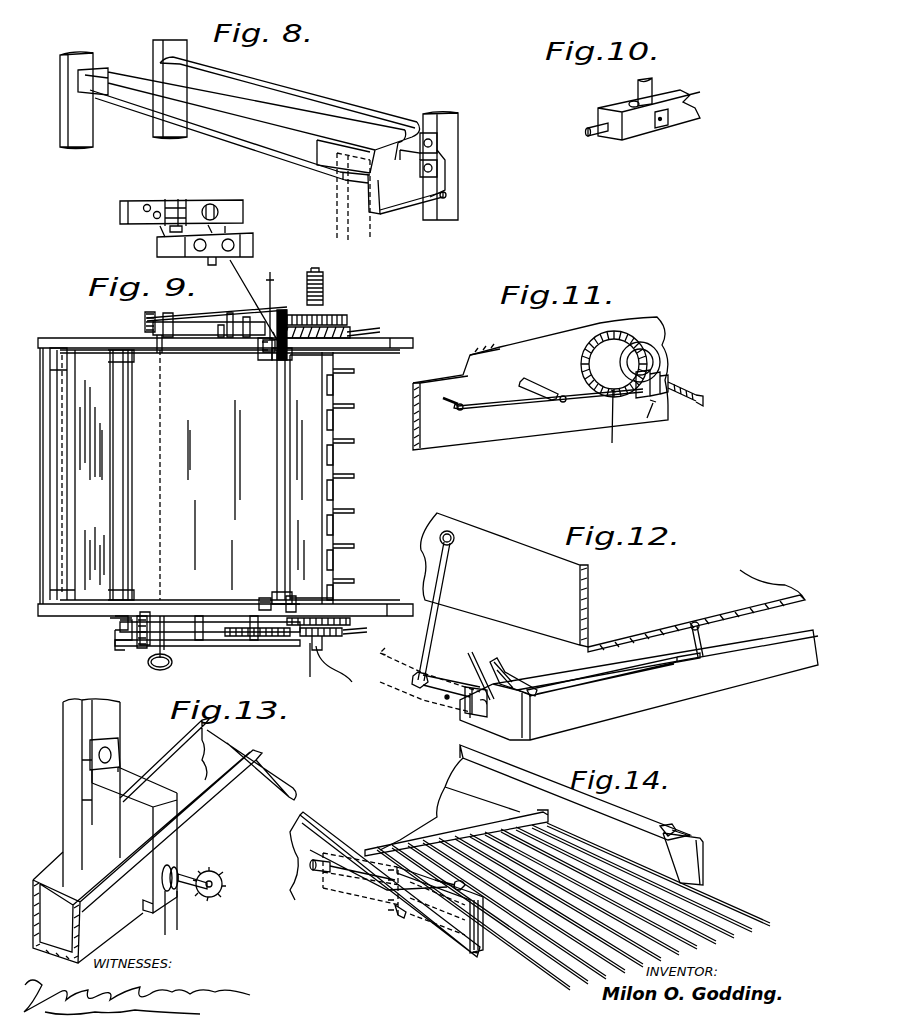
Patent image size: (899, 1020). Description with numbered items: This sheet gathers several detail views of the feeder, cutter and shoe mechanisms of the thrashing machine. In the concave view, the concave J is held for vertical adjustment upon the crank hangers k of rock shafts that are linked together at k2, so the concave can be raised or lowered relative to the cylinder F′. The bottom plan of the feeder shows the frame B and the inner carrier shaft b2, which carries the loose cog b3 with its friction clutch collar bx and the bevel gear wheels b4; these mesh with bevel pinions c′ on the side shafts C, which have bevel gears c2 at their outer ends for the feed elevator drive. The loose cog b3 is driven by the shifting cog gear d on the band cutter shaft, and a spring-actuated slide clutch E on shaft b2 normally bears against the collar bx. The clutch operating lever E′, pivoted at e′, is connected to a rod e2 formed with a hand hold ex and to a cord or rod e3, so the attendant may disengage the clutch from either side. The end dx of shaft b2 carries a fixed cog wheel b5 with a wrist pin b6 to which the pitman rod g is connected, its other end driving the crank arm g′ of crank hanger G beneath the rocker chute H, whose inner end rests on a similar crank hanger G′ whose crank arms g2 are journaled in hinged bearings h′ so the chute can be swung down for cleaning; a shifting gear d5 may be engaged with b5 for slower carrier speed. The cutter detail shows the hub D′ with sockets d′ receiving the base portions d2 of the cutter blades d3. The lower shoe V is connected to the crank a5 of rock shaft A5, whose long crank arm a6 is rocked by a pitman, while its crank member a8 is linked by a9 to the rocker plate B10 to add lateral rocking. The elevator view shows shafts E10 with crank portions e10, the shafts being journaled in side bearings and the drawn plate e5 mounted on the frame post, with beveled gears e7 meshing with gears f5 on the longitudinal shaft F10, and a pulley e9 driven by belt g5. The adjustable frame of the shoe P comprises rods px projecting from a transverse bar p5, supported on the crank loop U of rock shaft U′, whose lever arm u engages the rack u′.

In FIG. 8, the concave J is at (297, 112).
In FIG. 8, the crank hangers k is at (246, 138).
In FIG. 8, the link k2 is at (420, 205).
In FIG. 8, the hinged bearings h′ is at (170, 206).
In FIG. 9, the hinged bearings h′ is at (263, 345).
In FIG. 8, the crank arms g2 is at (205, 245).
In FIG. 9, the crank arms g2 is at (270, 358).
In FIG. 8, the crank hanger G′ is at (234, 260).
In FIG. 9, the crank hanger G′ is at (280, 472).
In FIG. 10, the square enlargement or hub D′ is at (700, 100).
In FIG. 10, the cutter blades d3 is at (654, 85).
In FIG. 9, the cutter blades d3 is at (342, 670).
In FIG. 10, the base portions d2 is at (630, 103).
In FIG. 10, the stud b is at (596, 135).
In FIG. 10, the sockets d′ is at (662, 128).
In FIG. 11, the frame B is at (522, 356).
In FIG. 9, the frame B is at (100, 445).
In FIG. 11, the bevel gear wheels b4 is at (620, 332).
In FIG. 9, the bevel gear wheels b4 is at (325, 340).
In FIG. 11, the loose cog b3 is at (652, 350).
In FIG. 9, the loose cog b3 is at (348, 318).
In FIG. 11, the friction clutch collar bx is at (662, 372).
In FIG. 9, the friction clutch collar bx is at (325, 300).
In FIG. 11, the cylinder F′ is at (518, 410).
In FIG. 11, the rod e2 is at (461, 403).
In FIG. 9, the rod e2 is at (158, 352).
In FIG. 11, the pivot e′ is at (562, 395).
In FIG. 9, the pivot e′ is at (222, 330).
In FIG. 11, the cord or rod e3 is at (603, 419).
In FIG. 9, the cord or rod e3 is at (280, 302).
In FIG. 11, the slide clutch E is at (647, 418).
In FIG. 9, the slide clutch E is at (283, 312).
In FIG. 12, the shoe V is at (613, 582).
In FIG. 12, the fixed cog wheel b5 is at (435, 609).
In FIG. 9, the fixed cog wheel b5 is at (330, 638).
In FIG. 12, the rocker plate B10 is at (438, 700).
In FIG. 12, the link a9 is at (486, 672).
In FIG. 12, the long crank arm a6 is at (484, 665).
In FIG. 12, the crank member a8 is at (512, 676).
In FIG. 12, the rock shaft A5 is at (612, 664).
In FIG. 12, the crank a5 is at (705, 637).
In FIG. 13, the plate e5 is at (153, 823).
In FIG. 13, the crank portions e10 is at (147, 898).
In FIG. 13, the longitudinal shaft F10 is at (280, 780).
In FIG. 13, the pulley e9 is at (177, 867).
In FIG. 13, the bevel gears f5 is at (213, 857).
In FIG. 13, the beveled gears e7 is at (222, 882).
In FIG. 13, the belt g5 is at (164, 924).
In FIG. 13, the shafts E10 is at (190, 900).
In FIG. 14, the shoe P is at (377, 832).
In FIG. 14, the transverse bar p5 is at (457, 833).
In FIG. 14, the arms or rods px is at (490, 984).
In FIG. 14, the rock shaft U′ is at (666, 852).
In FIG. 14, the lever arm u is at (432, 892).
In FIG. 14, the rack u′ is at (398, 910).
In FIG. 14, the crank loop U is at (510, 932).
In FIG. 9, the crank hanger G is at (128, 542).
In FIG. 9, the rocker trough or chute H is at (186, 452).
In FIG. 9, the shaft b2 is at (313, 350).
In FIG. 9, the shafts C is at (172, 320).
In FIG. 9, the bevel gears c2 is at (145, 322).
In FIG. 9, the clutch operating lever E′ is at (226, 304).
In FIG. 9, the shifting cog gear d is at (371, 326).
In FIG. 9, the bevel pinions c′ is at (290, 605).
In FIG. 9, the crank arm g′ is at (115, 632).
In FIG. 9, the hand hold ex is at (152, 664).
In FIG. 9, the pitman rod g is at (225, 646).
In FIG. 9, the wrist pin b6 is at (295, 638).
In FIG. 9, the shifting gear d5 is at (365, 631).
In FIG. 9, the end of shaft dx is at (319, 667).